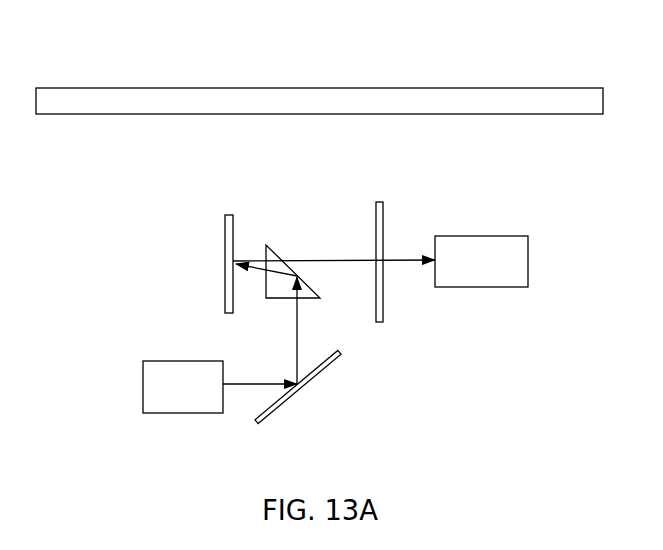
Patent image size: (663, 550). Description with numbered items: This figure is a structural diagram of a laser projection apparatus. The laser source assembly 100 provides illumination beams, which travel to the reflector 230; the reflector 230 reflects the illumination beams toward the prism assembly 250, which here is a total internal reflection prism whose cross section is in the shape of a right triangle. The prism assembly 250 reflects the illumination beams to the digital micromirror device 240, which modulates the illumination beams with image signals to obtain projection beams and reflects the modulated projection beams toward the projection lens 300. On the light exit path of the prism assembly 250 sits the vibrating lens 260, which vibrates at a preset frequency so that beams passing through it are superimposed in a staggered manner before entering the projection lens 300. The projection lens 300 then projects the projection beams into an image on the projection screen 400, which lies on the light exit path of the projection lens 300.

The projection screen 400 is at (365, 88).
The digital micromirror device 240 is at (229, 215).
The prism assembly 250 is at (265, 245).
The vibrating lens 260 is at (380, 202).
The projection lens 300 is at (478, 236).
The laser source assembly 100 is at (183, 413).
The reflector 230 is at (292, 405).